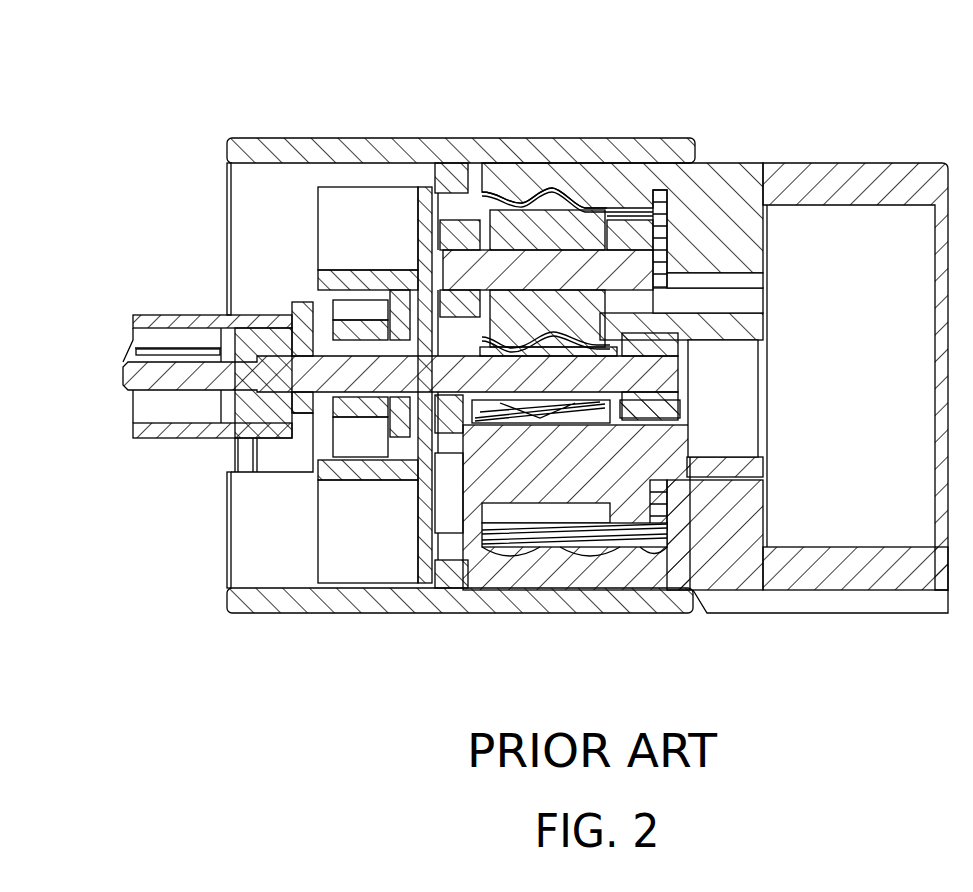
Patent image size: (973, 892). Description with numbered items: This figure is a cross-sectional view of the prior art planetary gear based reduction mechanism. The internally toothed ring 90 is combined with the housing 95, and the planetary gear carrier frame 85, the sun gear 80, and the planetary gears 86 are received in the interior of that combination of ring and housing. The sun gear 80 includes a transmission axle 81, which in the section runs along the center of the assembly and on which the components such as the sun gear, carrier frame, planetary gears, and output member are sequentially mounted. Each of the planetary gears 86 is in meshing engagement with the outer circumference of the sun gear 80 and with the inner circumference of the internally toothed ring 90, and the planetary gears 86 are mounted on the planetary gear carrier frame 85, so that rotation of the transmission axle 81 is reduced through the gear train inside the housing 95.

The sun gear 80 is at (517, 407).
The transmission axle 81 is at (279, 370).
The planetary gear carrier frame 85 is at (644, 206).
The planetary gears 86 is at (567, 186).
The internally toothed ring 90 is at (836, 156).
The housing 95 is at (375, 132).